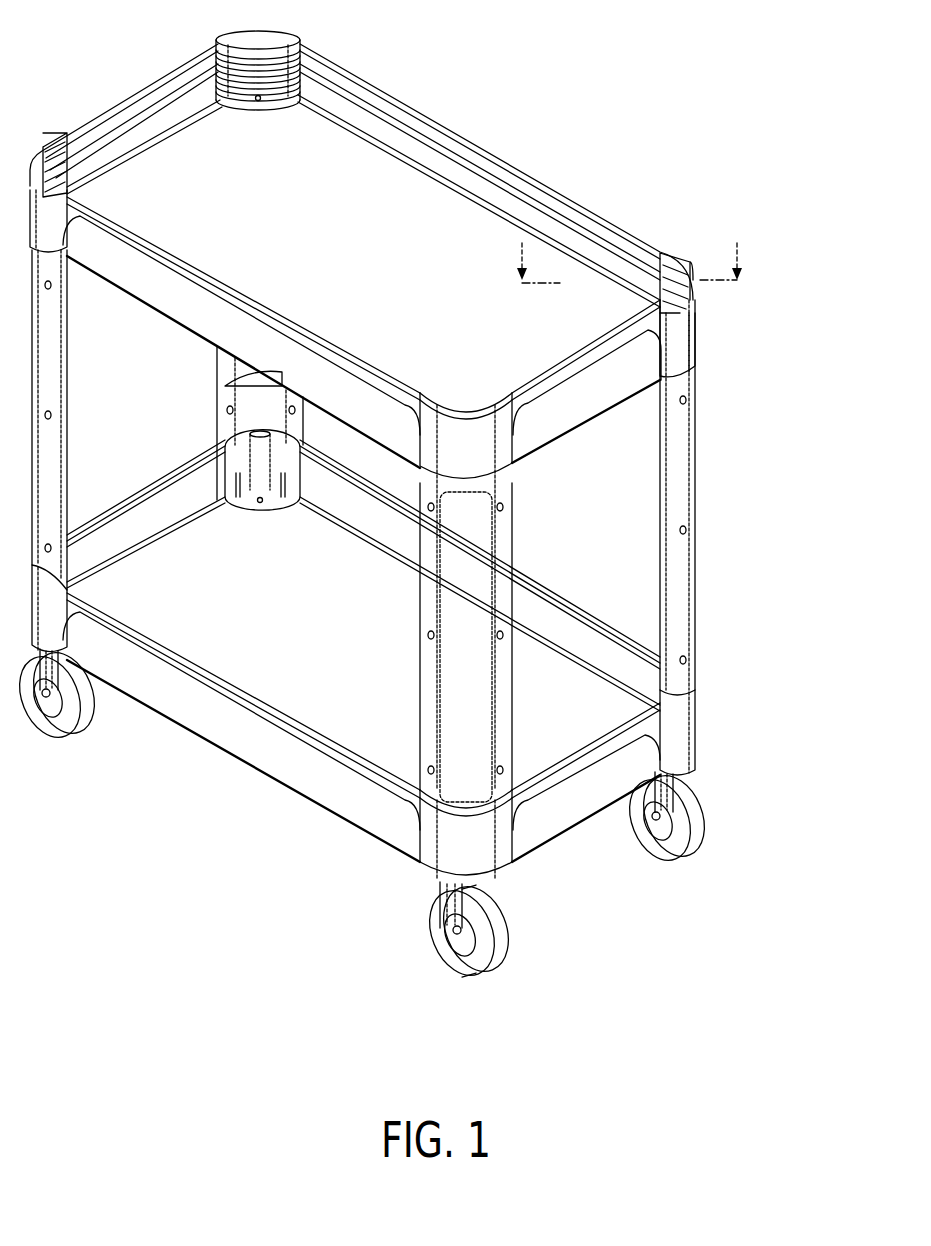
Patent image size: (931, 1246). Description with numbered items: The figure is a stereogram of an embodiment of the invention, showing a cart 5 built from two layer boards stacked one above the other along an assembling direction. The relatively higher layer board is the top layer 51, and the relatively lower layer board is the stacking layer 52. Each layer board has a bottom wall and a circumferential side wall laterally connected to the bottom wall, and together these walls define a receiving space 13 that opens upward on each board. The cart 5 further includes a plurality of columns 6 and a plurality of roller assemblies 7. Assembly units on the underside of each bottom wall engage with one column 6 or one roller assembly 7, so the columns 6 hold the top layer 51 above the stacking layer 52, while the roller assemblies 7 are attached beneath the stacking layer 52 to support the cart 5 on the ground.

The cart 5 is at (130, 76).
The top layer 51 is at (706, 320).
The stacking layer 52 is at (708, 724).
The column 6 is at (689, 512).
The roller assembly 7 is at (430, 953).
The receiving space 13 is at (338, 686).